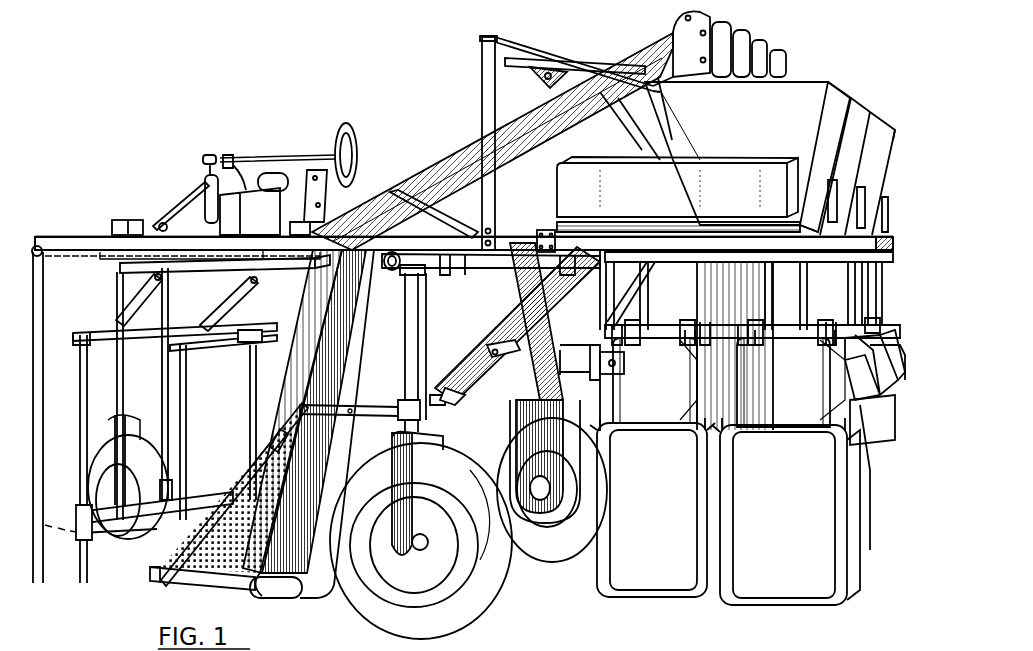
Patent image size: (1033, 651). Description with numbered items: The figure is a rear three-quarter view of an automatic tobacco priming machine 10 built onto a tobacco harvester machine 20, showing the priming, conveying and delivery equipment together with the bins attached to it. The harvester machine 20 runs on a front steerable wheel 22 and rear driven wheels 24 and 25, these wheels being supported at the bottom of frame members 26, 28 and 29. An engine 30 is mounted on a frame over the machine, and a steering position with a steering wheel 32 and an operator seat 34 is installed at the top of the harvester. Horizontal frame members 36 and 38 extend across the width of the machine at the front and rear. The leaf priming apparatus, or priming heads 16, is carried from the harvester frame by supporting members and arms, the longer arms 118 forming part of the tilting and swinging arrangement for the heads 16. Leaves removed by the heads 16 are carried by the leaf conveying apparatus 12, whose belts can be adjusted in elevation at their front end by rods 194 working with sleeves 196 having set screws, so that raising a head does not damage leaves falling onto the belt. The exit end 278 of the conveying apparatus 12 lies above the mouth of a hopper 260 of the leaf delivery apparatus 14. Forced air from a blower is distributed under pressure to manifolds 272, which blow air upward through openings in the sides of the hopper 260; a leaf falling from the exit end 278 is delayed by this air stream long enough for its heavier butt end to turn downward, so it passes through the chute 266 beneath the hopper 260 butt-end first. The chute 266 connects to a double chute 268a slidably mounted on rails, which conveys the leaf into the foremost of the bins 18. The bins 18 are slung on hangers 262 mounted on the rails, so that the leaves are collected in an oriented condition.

The automatic tobacco priming machine 10 is at (178, 94).
The leaf conveying apparatus 12 is at (320, 594).
The leaf delivery apparatus 14 is at (843, 78).
The leaf priming apparatus (priming heads) 16 is at (160, 550).
The bins 18 is at (650, 574).
The tobacco harvester machine 20 is at (380, 168).
The front, steerable wheel 22 is at (96, 462).
The rear, driven wheel 24 is at (488, 582).
The rear, driven wheel 25 is at (566, 556).
The frame member 26 is at (130, 287).
The frame member 28 is at (427, 343).
The frame member 29 is at (618, 352).
The engine 30 is at (258, 182).
The steering wheel 32 is at (345, 121).
The operator seat 34 is at (446, 158).
The horizontal frame member 36 is at (70, 244).
The horizontal frame member 38 is at (470, 268).
The arms 118 is at (142, 316).
The rods 194 is at (244, 486).
The sleeves 196 is at (268, 440).
The hopper 260 is at (755, 128).
The hangers 262 is at (625, 394).
The chute 266 is at (760, 310).
The double chute 268a is at (810, 430).
The manifolds 272 is at (748, 204).
The exit end 278 is at (752, 36).